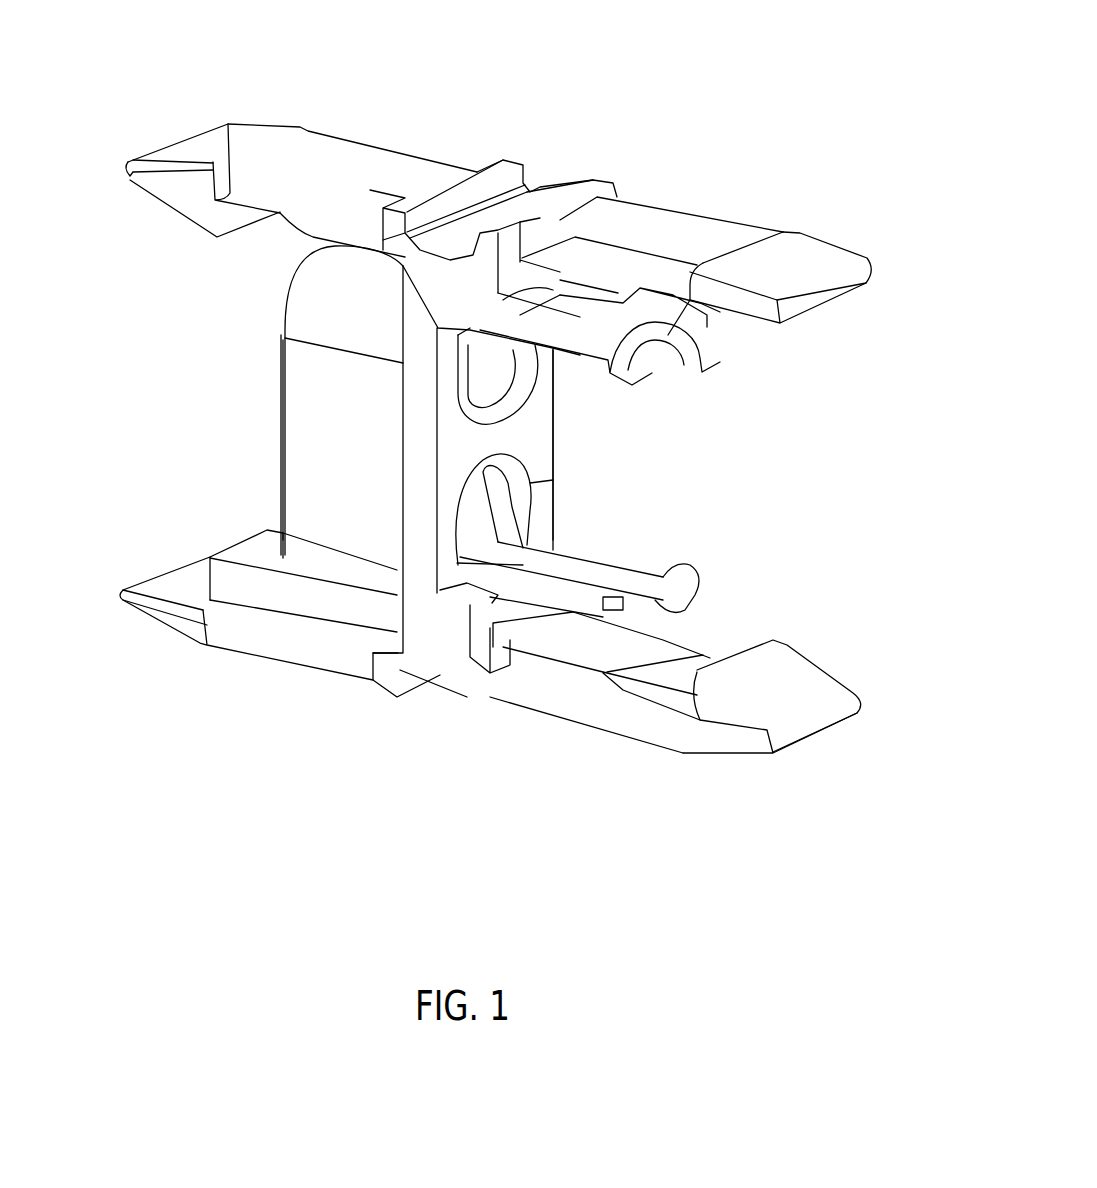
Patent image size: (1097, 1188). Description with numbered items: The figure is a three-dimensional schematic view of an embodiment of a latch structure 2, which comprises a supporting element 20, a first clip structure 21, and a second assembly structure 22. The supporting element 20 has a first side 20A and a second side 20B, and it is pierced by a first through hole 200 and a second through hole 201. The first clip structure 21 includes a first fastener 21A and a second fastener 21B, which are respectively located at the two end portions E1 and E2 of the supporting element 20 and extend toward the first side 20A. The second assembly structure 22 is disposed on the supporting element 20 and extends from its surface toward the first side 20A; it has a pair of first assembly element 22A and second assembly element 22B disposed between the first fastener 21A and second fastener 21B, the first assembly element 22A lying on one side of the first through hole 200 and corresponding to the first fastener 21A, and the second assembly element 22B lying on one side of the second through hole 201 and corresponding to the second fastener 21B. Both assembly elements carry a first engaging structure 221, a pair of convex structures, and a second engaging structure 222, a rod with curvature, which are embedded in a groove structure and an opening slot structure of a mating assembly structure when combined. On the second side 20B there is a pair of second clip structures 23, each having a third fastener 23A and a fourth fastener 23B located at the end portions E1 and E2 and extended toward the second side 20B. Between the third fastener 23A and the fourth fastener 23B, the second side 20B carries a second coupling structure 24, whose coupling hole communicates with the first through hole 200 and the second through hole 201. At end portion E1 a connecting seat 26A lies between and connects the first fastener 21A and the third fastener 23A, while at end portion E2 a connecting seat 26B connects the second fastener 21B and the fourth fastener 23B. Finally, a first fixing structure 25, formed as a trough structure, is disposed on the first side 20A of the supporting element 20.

The latch structure 2 is at (122, 122).
The supporting element 20 is at (406, 459).
The first side 20A is at (660, 490).
The second side 20B is at (162, 405).
The first through hole 200 is at (483, 373).
The second through hole 201 is at (492, 510).
The first clip structure 21 is at (813, 255).
The first fastener 21A is at (682, 237).
The second fastener 21B is at (602, 712).
The second assembly structure 22 is at (866, 405).
The first assembly element 22A is at (683, 345).
The second assembly element 22B is at (623, 607).
The first engaging structure 221 is at (625, 355).
The second engaging structure 222 is at (568, 345).
The second clip structure 23 is at (247, 116).
The third fastener 23A is at (355, 185).
The fourth fastener 23B is at (262, 638).
The second coupling structure 24 is at (300, 385).
The first fixing structure 25 is at (445, 610).
The connecting seat 26A is at (430, 266).
The connecting seat 26B is at (438, 667).
The end portion E1 is at (608, 183).
The end portion E2 is at (483, 742).